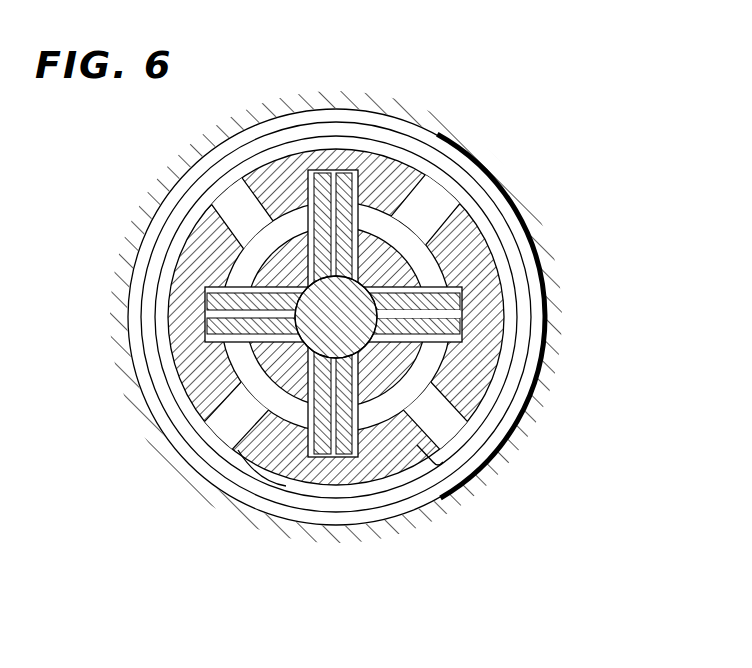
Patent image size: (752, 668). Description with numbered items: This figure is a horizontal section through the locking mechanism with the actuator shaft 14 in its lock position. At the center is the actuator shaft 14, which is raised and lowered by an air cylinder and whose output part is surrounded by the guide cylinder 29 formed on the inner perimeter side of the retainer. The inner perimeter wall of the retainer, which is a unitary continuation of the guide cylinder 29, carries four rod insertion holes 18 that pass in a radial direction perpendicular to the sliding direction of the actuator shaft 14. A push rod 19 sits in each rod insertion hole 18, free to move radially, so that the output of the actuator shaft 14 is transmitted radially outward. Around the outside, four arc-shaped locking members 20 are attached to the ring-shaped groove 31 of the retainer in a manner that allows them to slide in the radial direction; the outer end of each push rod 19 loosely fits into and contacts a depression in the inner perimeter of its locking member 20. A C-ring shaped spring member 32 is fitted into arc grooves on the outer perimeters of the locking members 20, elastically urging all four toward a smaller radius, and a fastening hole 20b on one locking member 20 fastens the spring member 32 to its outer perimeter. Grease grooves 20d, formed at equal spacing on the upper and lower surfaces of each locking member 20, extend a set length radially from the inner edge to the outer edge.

The actuator shaft 14 is at (350, 298).
The rod insertion holes 18 is at (195, 221).
The push rods 19 is at (345, 458).
The arc-shaped locking members 20 is at (410, 160).
The fastening hole 20b is at (417, 453).
The grease grooves 20d is at (420, 316).
The guide cylinder 29 is at (245, 465).
The ring-shaped groove 31 is at (237, 363).
The spring member 32 is at (503, 458).